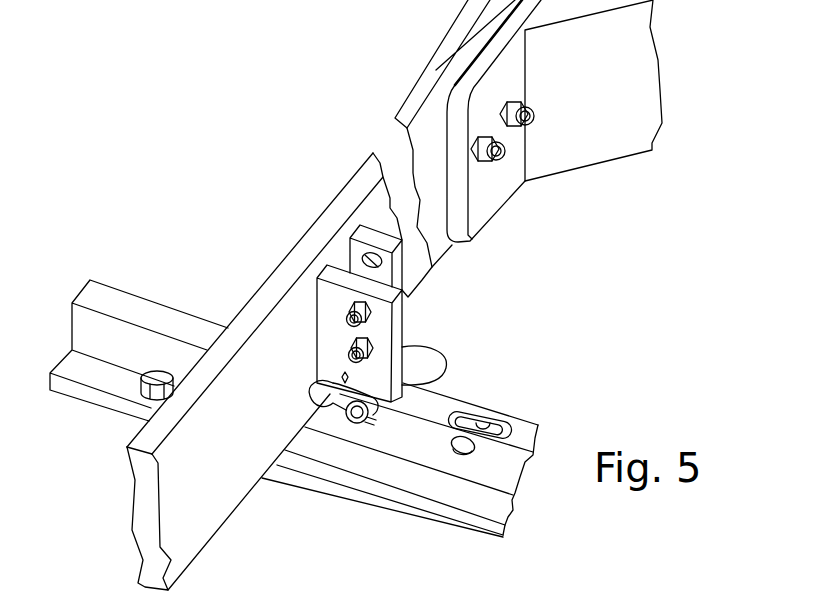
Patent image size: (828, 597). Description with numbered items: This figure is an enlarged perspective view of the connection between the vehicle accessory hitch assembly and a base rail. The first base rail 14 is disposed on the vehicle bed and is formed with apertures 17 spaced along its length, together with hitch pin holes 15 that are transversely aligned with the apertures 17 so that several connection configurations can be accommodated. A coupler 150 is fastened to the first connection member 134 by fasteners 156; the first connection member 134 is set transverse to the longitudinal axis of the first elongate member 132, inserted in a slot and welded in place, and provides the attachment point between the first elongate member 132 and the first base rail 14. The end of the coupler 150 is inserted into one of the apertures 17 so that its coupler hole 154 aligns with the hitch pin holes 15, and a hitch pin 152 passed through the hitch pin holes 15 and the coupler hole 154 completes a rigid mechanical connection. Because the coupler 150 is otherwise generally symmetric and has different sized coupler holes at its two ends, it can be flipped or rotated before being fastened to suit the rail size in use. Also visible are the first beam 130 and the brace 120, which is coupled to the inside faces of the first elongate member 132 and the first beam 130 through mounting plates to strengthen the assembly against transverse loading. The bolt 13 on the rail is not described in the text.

The bolt 13 is at (152, 380).
The first base rail 14 is at (141, 307).
The hitch pin holes 15 is at (457, 453).
The apertures 17 is at (347, 382).
The brace 120 is at (595, 127).
The first beam 130 is at (425, 63).
The first elongate member 132 is at (415, 150).
The first connection member 134 is at (380, 330).
The coupler 150 is at (360, 210).
The hitch pin 152 is at (446, 370).
The coupler hole 154 is at (370, 262).
The fasteners 156 is at (347, 355).